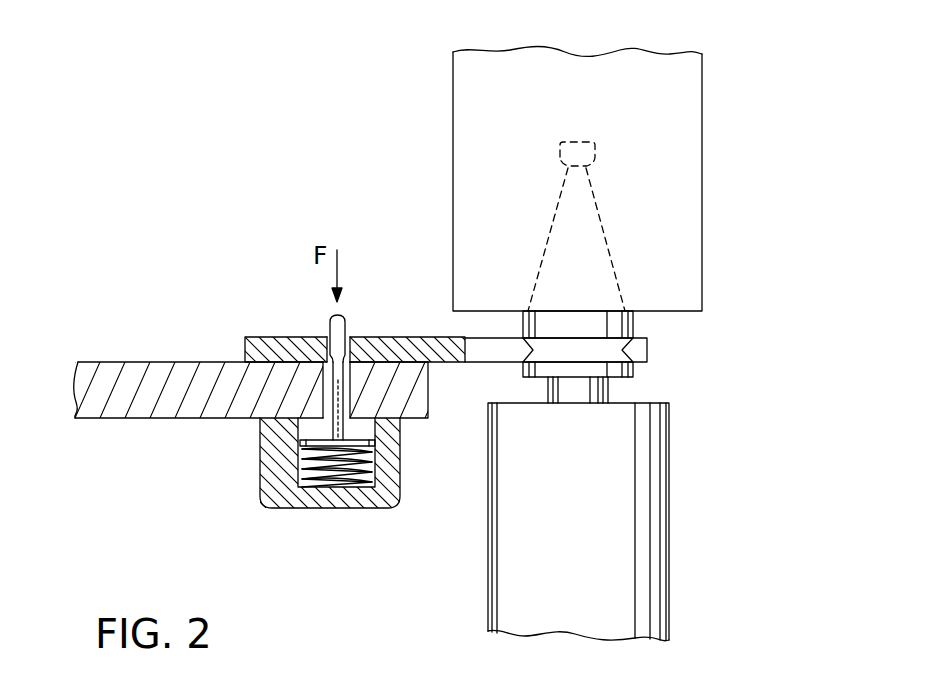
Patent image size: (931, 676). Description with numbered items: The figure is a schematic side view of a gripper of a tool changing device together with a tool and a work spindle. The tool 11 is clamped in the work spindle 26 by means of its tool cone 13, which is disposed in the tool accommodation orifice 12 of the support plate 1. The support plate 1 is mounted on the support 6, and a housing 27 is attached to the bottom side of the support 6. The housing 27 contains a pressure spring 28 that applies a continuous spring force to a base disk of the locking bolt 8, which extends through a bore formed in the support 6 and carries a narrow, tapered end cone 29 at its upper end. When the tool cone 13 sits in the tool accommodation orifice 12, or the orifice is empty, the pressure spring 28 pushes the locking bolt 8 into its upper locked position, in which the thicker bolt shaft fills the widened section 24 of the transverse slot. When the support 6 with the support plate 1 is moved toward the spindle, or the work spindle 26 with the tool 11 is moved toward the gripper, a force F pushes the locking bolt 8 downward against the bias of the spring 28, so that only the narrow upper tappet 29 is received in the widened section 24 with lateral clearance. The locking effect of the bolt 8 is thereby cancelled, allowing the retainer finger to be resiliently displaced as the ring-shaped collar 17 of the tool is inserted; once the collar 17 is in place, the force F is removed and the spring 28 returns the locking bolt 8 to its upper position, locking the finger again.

The support plate 1 is at (393, 347).
The support 6 is at (107, 408).
The locking bolt 8 is at (333, 423).
The tool 11 is at (660, 493).
The tool accommodation orifice 12 is at (647, 350).
The tool cone 13 is at (570, 207).
The ring-shaped collar 17 is at (628, 328).
The widened section 24 is at (327, 347).
The work spindle 26 is at (693, 106).
The housing 27 is at (323, 500).
The pressure spring 28 is at (313, 472).
The tapered end cone 29 is at (330, 323).